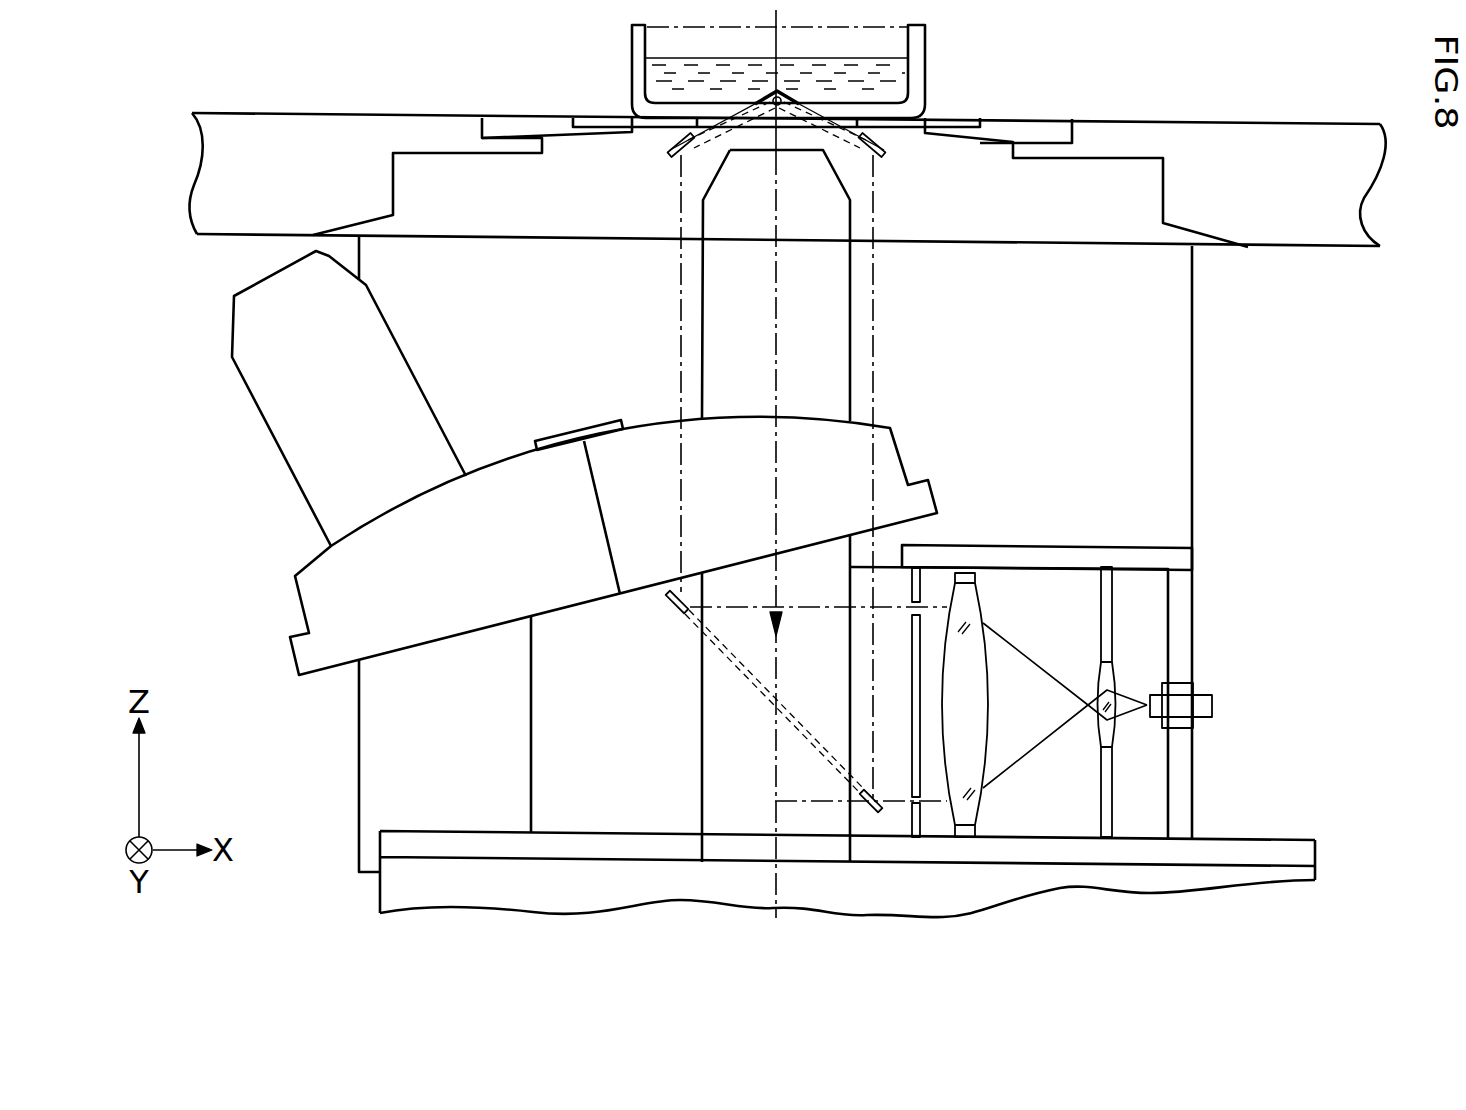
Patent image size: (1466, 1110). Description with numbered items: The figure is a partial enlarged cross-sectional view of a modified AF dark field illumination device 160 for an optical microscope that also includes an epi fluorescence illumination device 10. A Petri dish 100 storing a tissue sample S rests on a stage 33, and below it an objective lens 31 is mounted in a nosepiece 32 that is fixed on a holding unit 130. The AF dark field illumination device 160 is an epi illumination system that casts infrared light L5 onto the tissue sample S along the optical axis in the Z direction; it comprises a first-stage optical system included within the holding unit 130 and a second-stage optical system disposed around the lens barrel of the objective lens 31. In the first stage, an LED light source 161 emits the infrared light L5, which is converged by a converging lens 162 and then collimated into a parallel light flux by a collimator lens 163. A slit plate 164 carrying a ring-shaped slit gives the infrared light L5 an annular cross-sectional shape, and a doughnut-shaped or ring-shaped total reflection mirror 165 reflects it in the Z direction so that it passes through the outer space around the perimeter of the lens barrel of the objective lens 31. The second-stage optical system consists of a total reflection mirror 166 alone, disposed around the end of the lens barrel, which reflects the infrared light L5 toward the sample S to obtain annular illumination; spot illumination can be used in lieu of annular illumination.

The epi fluorescence illumination device 10 is at (385, 895).
The objective lens 31 is at (835, 298).
The nosepiece 32 is at (905, 447).
The stage 33 is at (300, 130).
The Petri dish 100 is at (925, 88).
The tissue sample S is at (875, 66).
The infrared light L5 is at (678, 343).
The holding unit 130 is at (1145, 558).
The AF dark field illumination device 160 is at (1067, 604).
The LED light source 161 is at (1193, 708).
The converging lens 162 is at (1100, 662).
The collimator lens 163 is at (1044, 648).
The slit plate 164 is at (922, 580).
The total reflection mirror 165 is at (877, 814).
The total reflection mirror 166 is at (670, 150).